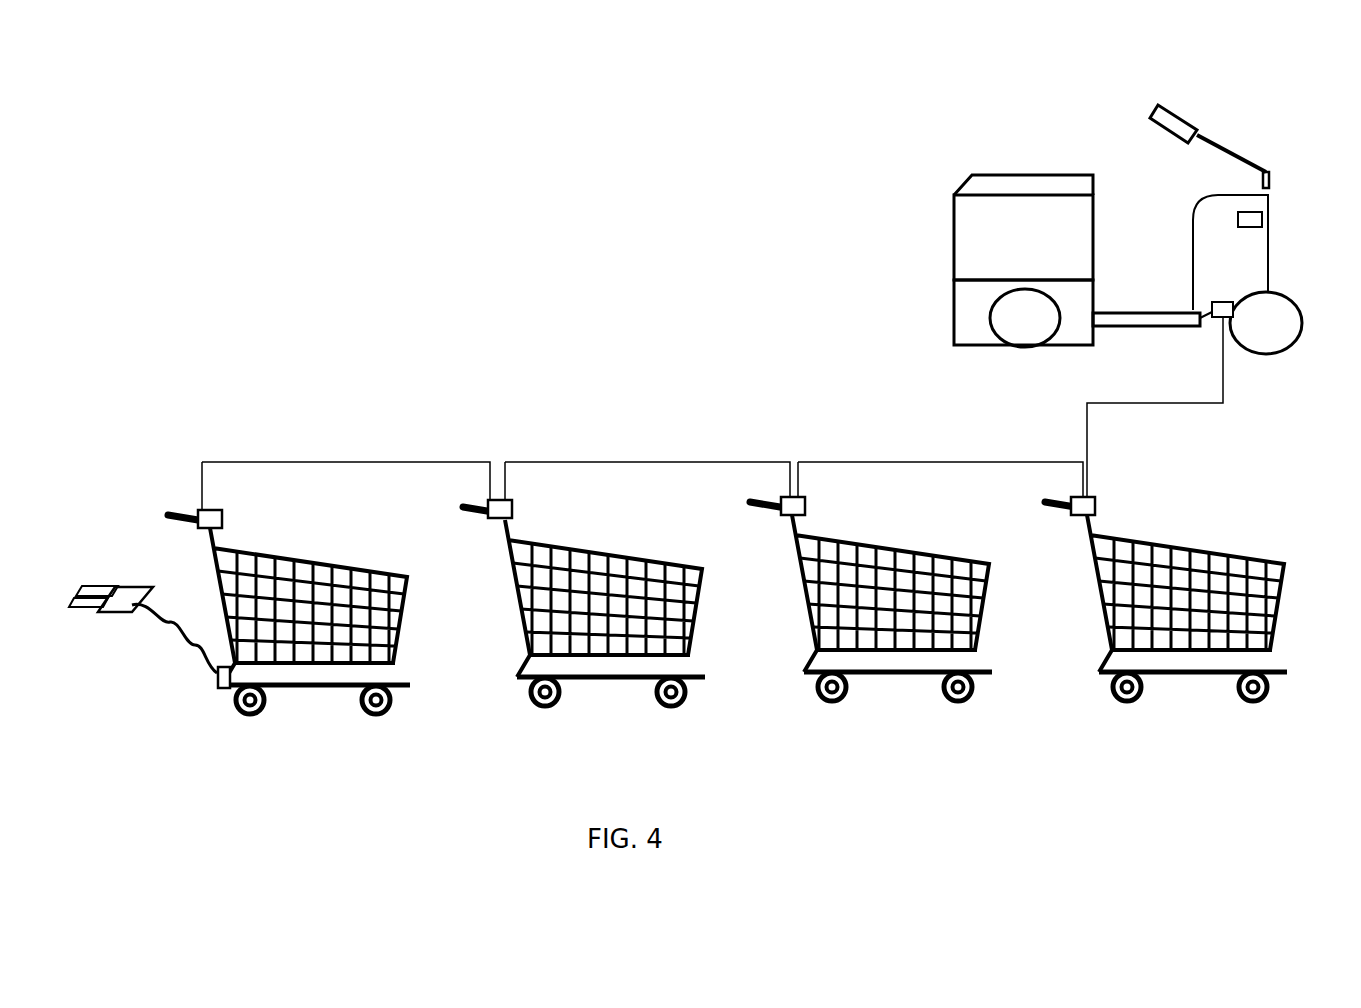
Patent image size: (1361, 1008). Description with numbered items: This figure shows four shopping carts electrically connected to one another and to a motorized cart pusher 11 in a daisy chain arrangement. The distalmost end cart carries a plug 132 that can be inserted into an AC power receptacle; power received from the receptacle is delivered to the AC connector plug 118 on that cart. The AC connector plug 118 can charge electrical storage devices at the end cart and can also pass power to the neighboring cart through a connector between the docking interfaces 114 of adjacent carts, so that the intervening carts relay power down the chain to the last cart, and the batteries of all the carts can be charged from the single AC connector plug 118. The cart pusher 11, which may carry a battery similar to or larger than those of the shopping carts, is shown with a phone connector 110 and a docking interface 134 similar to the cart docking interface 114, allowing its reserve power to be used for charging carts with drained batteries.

The cart pusher 11 is at (1215, 102).
The phone connector 110 is at (1262, 212).
The docking interface 134 is at (1218, 302).
The docking interface 114 is at (223, 509).
The AC connector plug 118 is at (215, 680).
The plug 132 is at (93, 583).